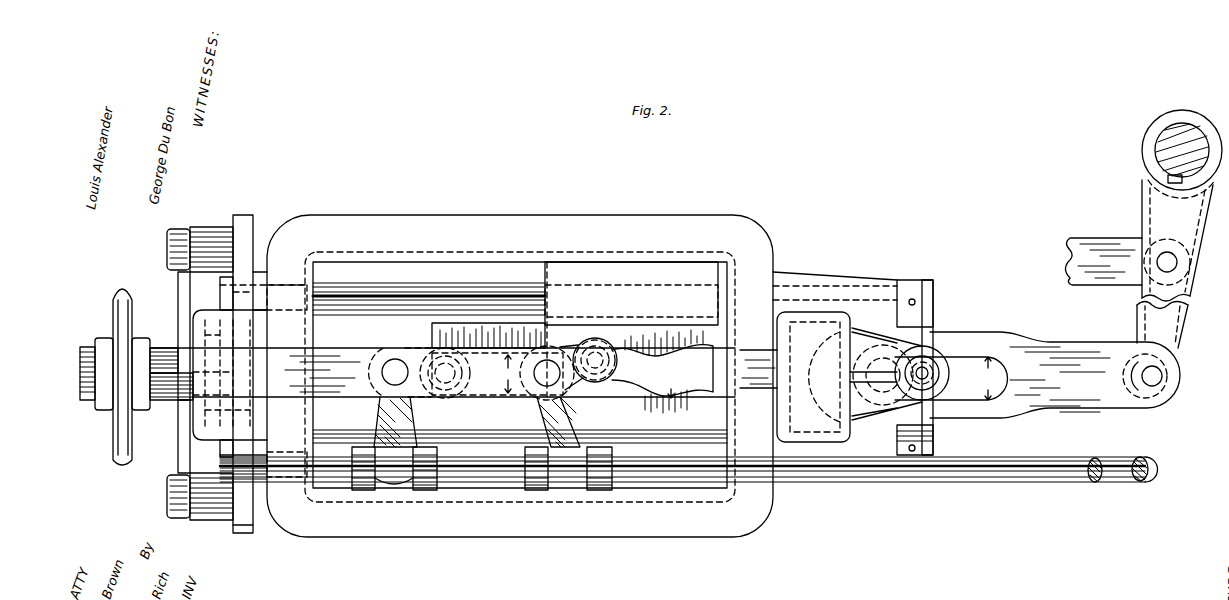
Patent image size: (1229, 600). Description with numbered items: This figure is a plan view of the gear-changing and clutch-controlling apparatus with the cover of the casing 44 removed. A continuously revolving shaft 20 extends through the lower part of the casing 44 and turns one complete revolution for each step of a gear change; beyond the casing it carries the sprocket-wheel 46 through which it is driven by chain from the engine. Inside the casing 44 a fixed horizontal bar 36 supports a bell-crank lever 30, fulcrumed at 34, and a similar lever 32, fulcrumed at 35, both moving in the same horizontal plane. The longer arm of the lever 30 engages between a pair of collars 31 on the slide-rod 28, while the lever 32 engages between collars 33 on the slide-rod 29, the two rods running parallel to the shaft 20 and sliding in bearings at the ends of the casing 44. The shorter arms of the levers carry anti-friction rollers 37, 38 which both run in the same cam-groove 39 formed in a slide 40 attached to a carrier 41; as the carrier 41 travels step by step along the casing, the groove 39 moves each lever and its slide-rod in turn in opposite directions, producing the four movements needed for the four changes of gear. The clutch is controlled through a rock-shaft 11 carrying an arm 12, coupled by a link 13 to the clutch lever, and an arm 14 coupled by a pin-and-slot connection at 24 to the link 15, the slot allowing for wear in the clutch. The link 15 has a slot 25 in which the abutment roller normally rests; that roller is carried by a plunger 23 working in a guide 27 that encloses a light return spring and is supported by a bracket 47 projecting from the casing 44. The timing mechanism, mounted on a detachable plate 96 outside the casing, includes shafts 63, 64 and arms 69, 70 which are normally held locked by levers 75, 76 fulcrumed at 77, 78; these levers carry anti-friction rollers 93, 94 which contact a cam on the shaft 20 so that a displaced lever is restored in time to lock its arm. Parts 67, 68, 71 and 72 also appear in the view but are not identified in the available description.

The rock-shaft 11 is at (1160, 152).
The arm 12 is at (1143, 210).
The link 13 is at (1067, 260).
The arm 14 is at (1177, 317).
The link 15 is at (1022, 343).
The continuously-revolving shaft 20 is at (87, 400).
The plunger 23 is at (936, 380).
The pin-and-slot connection 24 is at (1138, 388).
The slot 25 is at (951, 378).
The guide 27 is at (934, 378).
The slide-rod 28 is at (488, 484).
The slide-rod 29 is at (1125, 482).
The bell-crank lever 30 is at (378, 420).
The collars 31 is at (425, 492).
The lever 32 is at (578, 412).
The collars 33 is at (600, 492).
The fulcrum 34 is at (392, 360).
The fulcrum 35 is at (545, 362).
The fixed horizontal bar 36 is at (325, 352).
The anti-friction roller 37 is at (462, 371).
The anti-friction roller 38 is at (612, 370).
The cam-groove 39 is at (605, 371).
The slide 40 is at (432, 336).
The carrier 41 is at (547, 276).
The casing 44 is at (435, 215).
The sprocket-wheel 46 is at (113, 318).
The bracket 47 is at (853, 363).
The shaft 63 is at (366, 292).
The shaft 64 is at (330, 430).
The plate 67 is at (924, 345).
The plate 68 is at (928, 410).
The arm 69 is at (223, 300).
The arm 70 is at (222, 452).
The sleeve 71 is at (222, 348).
The sleeve 72 is at (216, 398).
The lever 75 is at (178, 294).
The lever 76 is at (178, 457).
The fulcrum 77 is at (167, 243).
The fulcrum 78 is at (167, 499).
The anti-friction roller 93 is at (188, 347).
The anti-friction roller 94 is at (187, 402).
The detachable plate 96 is at (250, 530).